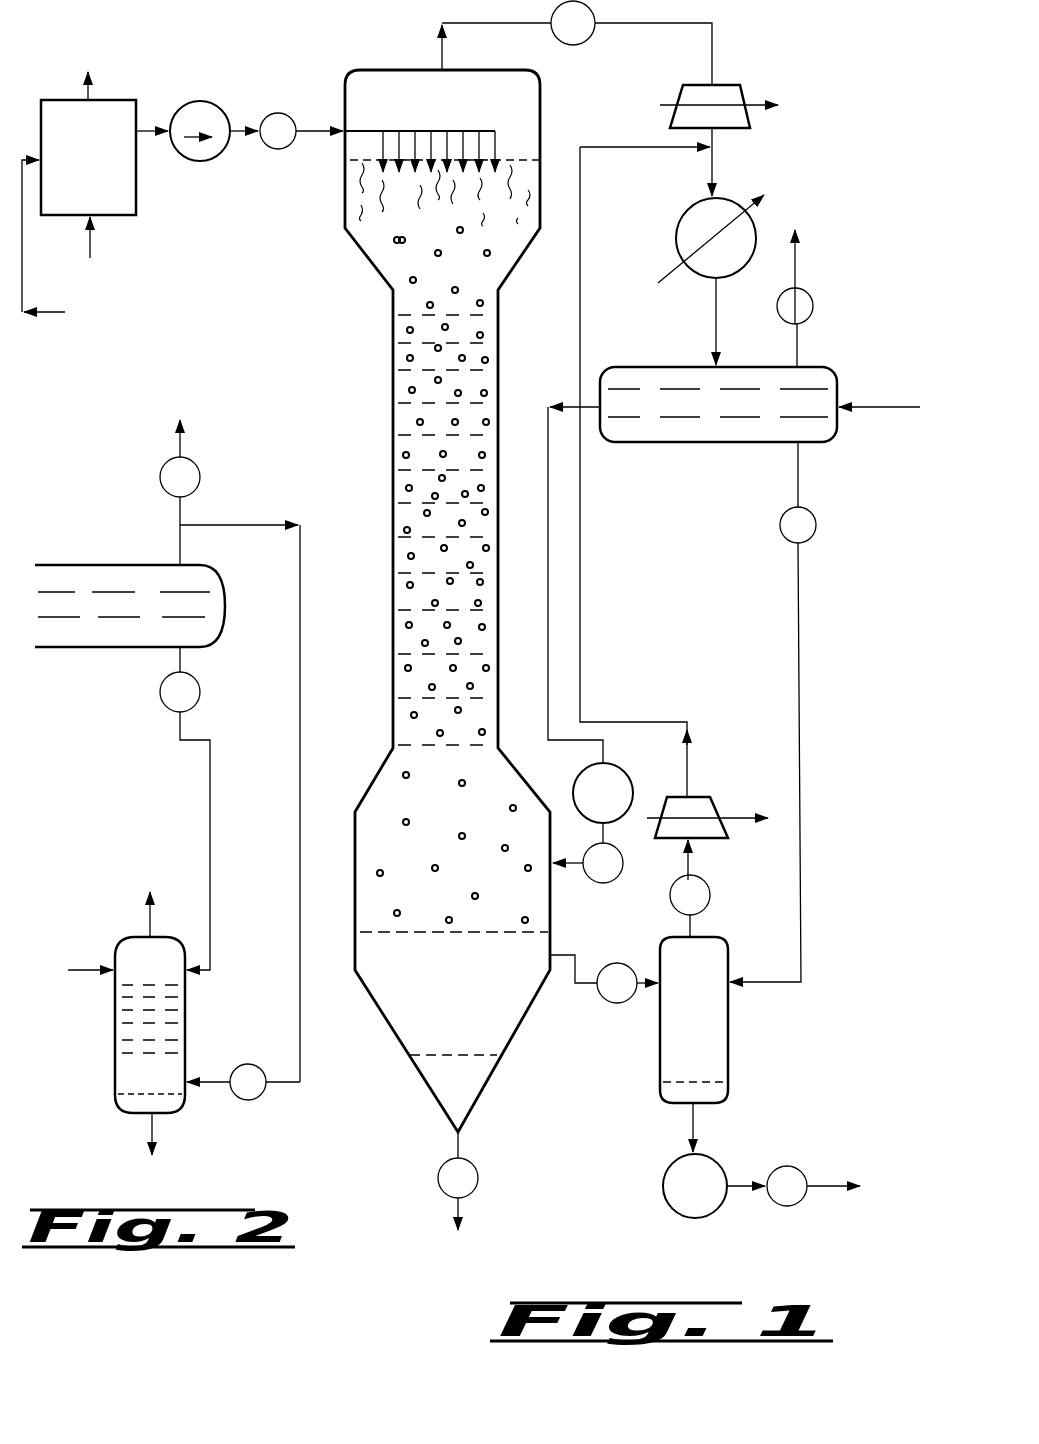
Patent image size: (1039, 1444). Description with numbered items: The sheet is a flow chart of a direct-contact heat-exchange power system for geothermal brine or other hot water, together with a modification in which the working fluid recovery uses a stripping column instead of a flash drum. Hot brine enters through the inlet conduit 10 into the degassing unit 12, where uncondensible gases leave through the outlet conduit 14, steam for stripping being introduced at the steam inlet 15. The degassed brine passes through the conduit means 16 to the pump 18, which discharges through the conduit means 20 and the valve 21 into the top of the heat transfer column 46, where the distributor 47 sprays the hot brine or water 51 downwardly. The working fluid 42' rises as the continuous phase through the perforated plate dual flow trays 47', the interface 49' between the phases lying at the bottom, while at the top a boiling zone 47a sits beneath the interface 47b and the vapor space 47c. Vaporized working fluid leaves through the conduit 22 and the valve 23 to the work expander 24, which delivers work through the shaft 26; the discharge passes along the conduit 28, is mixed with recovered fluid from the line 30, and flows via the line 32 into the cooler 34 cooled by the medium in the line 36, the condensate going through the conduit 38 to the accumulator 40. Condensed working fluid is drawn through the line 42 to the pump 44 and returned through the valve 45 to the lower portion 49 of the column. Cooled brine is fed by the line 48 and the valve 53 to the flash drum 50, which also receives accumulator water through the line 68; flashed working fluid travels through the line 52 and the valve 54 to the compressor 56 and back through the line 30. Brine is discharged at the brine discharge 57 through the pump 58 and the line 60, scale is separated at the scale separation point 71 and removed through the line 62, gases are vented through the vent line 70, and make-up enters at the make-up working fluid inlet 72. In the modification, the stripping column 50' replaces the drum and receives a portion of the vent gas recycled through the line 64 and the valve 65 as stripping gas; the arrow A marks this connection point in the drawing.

In FIG. 1, the inlet conduit 10 is at (22, 275).
In FIG. 1, the degassing unit 12 is at (136, 200).
In FIG. 1, the outlet conduit 14 is at (88, 90).
In FIG. 1, the steam inlet 15 is at (92, 248).
In FIG. 1, the conduit means 16 is at (149, 128).
In FIG. 1, the pump 18 is at (211, 110).
In FIG. 1, the conduit means 20 is at (249, 128).
In FIG. 1, the valve 21 is at (277, 149).
In FIG. 1, the conduit 22 is at (470, 27).
In FIG. 1, the valve 23 is at (575, 46).
In FIG. 1, the work expander 24 is at (686, 85).
In FIG. 1, the shaft 26 is at (757, 107).
In FIG. 1, the conduit 28 is at (712, 137).
In FIG. 1, the line 30 is at (626, 148).
In FIG. 1, the line 32 is at (708, 172).
In FIG. 1, the cooler 34 is at (680, 223).
In FIG. 1, the line 36 is at (670, 280).
In FIG. 1, the conduit 38 is at (712, 313).
In FIG. 1, the accumulator 40 is at (637, 367).
In FIG. 2, the accumulator 40 is at (222, 565).
In FIG. 1, the line 42 is at (565, 560).
In FIG. 1, the working fluid 42' is at (540, 776).
In FIG. 1, the pump 44 is at (618, 779).
In FIG. 1, the valve 45 is at (620, 867).
In FIG. 1, the heat transfer column 46 is at (391, 400).
In FIG. 1, the distributor 47 is at (420, 104).
In FIG. 1, the boiling zone 47a is at (373, 198).
In FIG. 1, the interface 47b is at (522, 162).
In FIG. 1, the vapor space 47c is at (476, 116).
In FIG. 1, the perforated plate dual flow trays 47' is at (370, 468).
In FIG. 1, the line 48 is at (584, 985).
In FIG. 2, the line 48 is at (75, 970).
In FIG. 1, the lower portion 49 is at (430, 885).
In FIG. 1, the interface 49' is at (563, 917).
In FIG. 1, the flash drum 50 is at (711, 1020).
In FIG. 2, the stripping column 50' is at (172, 1046).
In FIG. 1, the hot brine or water 51 is at (395, 243).
In FIG. 1, the line 52 is at (692, 920).
In FIG. 2, the line 52 is at (147, 920).
In FIG. 1, the valve 53 is at (617, 1003).
In FIG. 1, the valve 54 is at (712, 895).
In FIG. 1, the compressor 56 is at (728, 838).
In FIG. 1, the brine discharge 57 is at (695, 1127).
In FIG. 1, the pump 58 is at (718, 1176).
In FIG. 1, the line 60 is at (817, 1180).
In FIG. 1, the line 62 is at (462, 1208).
In FIG. 2, the line 64 is at (300, 707).
In FIG. 2, the valve 65 is at (248, 1100).
In FIG. 1, the line 68 is at (800, 612).
In FIG. 2, the line 68 is at (210, 828).
In FIG. 1, the vent line 70 is at (797, 348).
In FIG. 2, the vent line 70 is at (178, 507).
In FIG. 1, the scale separation point 71 is at (474, 1083).
In FIG. 1, the make-up working fluid inlet 72 is at (905, 410).
In FIG. 1, the arrow A is at (870, 168).